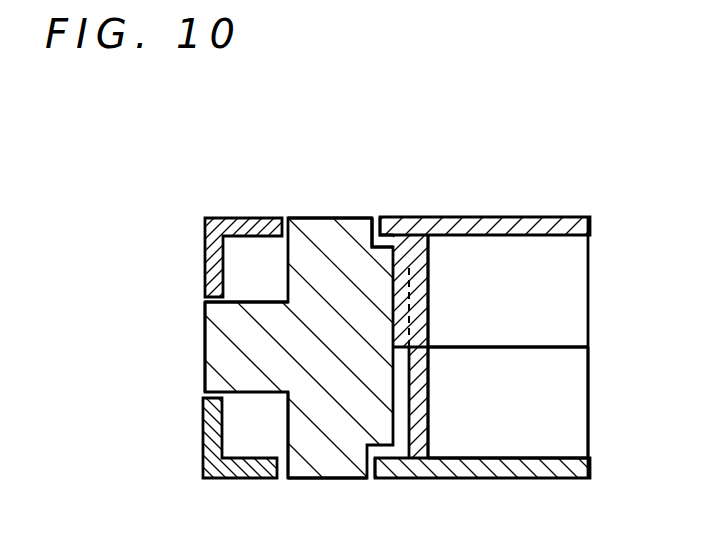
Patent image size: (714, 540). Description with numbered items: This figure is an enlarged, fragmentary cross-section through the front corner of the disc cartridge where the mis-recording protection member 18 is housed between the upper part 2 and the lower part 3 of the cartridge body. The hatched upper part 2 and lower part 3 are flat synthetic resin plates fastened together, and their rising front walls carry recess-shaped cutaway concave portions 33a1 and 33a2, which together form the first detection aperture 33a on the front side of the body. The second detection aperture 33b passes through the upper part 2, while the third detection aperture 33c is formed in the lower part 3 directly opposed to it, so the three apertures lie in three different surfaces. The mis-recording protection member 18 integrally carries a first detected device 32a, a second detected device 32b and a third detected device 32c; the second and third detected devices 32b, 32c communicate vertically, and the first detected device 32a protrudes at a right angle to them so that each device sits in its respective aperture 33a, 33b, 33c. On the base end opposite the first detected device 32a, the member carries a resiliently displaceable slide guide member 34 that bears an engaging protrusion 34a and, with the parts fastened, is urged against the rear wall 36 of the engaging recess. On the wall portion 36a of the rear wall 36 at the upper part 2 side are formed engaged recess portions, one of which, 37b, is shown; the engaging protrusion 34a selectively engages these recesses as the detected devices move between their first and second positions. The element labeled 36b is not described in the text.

The upper part 2 is at (522, 224).
The lower part 3 is at (523, 466).
The mis-recording protection member 18 is at (383, 215).
The first detected device 32a is at (222, 278).
The second detected device 32b is at (338, 228).
The third detected device 32c is at (337, 462).
The first detection aperture 33a is at (213, 348).
The cutaway concave portion 33a1 is at (250, 322).
The cutaway concave portion 33a2 is at (100, 297).
The second detection aperture 33b is at (302, 218).
The third detection aperture 33c is at (290, 480).
The slide guide member 34 is at (254, 438).
The engaging protrusion 34a is at (400, 400).
The rear wall 36 is at (490, 347).
The wall portion 36a is at (420, 288).
The holder partition 36b is at (438, 352).
The engaged recess portion 37b is at (410, 268).